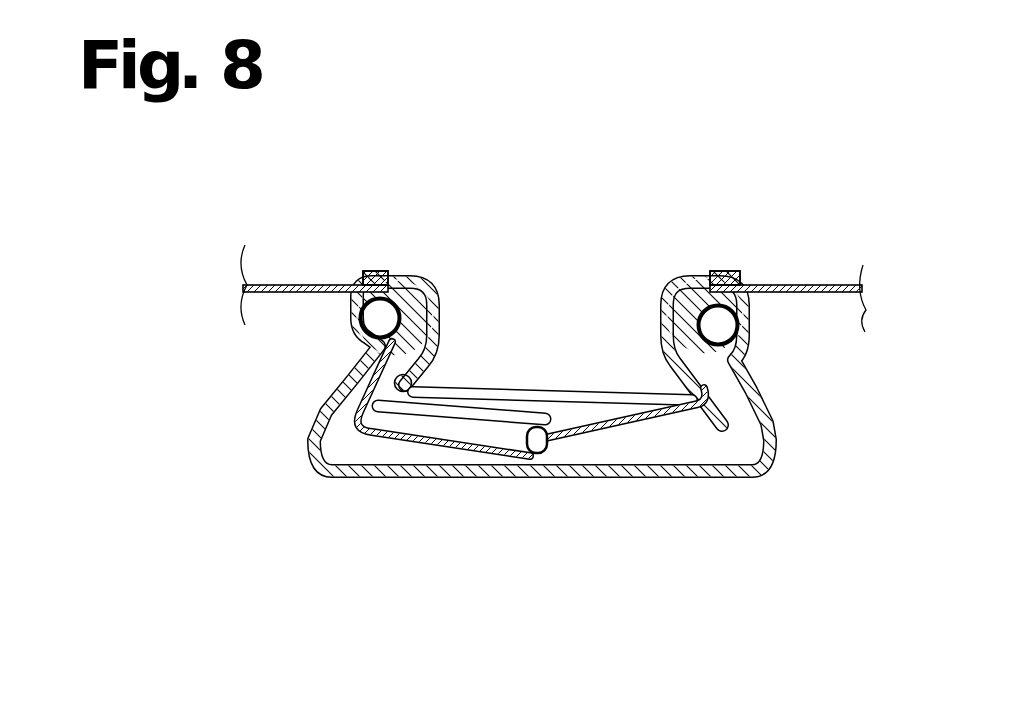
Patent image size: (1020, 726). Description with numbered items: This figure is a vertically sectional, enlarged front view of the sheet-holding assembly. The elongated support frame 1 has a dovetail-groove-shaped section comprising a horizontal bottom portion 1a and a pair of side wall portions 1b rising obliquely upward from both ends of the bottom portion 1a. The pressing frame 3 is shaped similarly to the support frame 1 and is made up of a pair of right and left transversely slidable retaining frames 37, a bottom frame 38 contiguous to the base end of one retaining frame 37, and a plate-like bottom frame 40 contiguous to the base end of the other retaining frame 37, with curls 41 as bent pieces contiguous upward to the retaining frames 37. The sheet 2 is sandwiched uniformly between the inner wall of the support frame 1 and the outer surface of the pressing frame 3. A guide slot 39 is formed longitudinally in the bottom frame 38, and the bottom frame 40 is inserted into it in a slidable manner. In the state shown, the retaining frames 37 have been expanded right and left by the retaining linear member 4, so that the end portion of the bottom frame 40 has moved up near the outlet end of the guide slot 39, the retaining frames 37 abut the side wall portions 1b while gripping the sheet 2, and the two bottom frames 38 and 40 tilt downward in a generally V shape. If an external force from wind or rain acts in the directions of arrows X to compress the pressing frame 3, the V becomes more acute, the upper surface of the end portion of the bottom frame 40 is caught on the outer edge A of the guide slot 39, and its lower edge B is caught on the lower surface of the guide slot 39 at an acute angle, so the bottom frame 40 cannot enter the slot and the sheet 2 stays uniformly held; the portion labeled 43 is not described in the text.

The elongated support frame 1 is at (601, 490).
The bottom portion 1a is at (463, 483).
The side wall portions 1b is at (337, 403).
The sheet 2 is at (830, 292).
The pressing frame 3 is at (578, 406).
The retaining linear member 4 is at (470, 390).
The retaining frames 37 is at (458, 282).
The bottom frame 38 is at (462, 428).
The guide slot 39 is at (447, 417).
The plate-like bottom frame 40 is at (653, 427).
The curls 41 is at (381, 271).
The corner projection 43 is at (767, 437).
The outer edge of the guide slot A is at (540, 410).
The lower edge of the end portion of the bottom frame B is at (503, 480).
The directions of arrows X is at (385, 445).